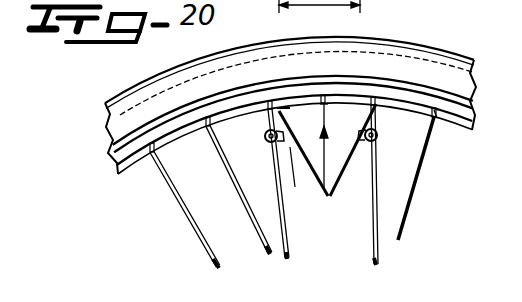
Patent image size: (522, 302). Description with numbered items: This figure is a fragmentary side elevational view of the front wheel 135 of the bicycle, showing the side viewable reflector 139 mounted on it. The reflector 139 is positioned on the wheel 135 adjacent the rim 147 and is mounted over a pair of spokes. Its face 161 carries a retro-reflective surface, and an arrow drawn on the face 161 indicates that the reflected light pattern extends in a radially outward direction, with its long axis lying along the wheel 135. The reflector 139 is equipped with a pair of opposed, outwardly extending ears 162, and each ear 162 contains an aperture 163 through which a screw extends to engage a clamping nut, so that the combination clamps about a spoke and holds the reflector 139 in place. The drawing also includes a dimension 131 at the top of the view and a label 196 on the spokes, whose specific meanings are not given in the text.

The width dimension 131 is at (319, 7).
The wheel 135 is at (151, 80).
The side viewable reflector 139 is at (374, 120).
The rim 147 is at (120, 170).
The face 161 is at (338, 172).
The ears 162 is at (264, 139).
The aperture 163 is at (335, 164).
The spoke 196 is at (281, 218).